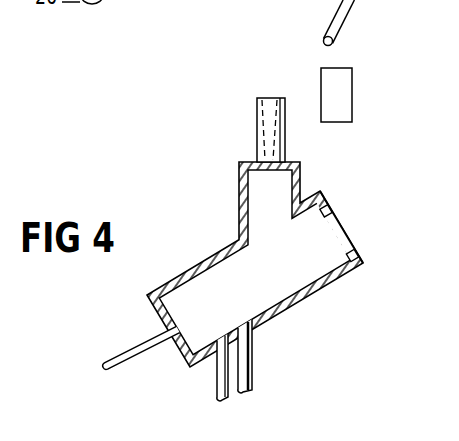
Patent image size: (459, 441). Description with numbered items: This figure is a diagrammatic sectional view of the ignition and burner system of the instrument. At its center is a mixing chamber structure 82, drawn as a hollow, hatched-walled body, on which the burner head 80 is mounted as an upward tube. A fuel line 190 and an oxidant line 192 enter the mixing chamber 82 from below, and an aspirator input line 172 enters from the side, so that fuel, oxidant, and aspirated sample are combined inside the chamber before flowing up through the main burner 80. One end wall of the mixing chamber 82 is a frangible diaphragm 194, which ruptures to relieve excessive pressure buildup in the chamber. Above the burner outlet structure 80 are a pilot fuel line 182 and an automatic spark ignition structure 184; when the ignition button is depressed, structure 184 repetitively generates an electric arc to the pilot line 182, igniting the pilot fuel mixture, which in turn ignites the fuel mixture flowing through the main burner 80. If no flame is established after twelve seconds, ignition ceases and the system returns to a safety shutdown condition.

The burner head 80 is at (257, 118).
The mixing chamber structure 82 is at (223, 250).
The aspirator input line 172 is at (132, 349).
The pilot fuel line 182 is at (331, 23).
The automatic spark ignition structure 184 is at (352, 97).
The fuel line 190 is at (217, 378).
The oxidant line 192 is at (252, 372).
The frangible diaphragm 194 is at (343, 230).